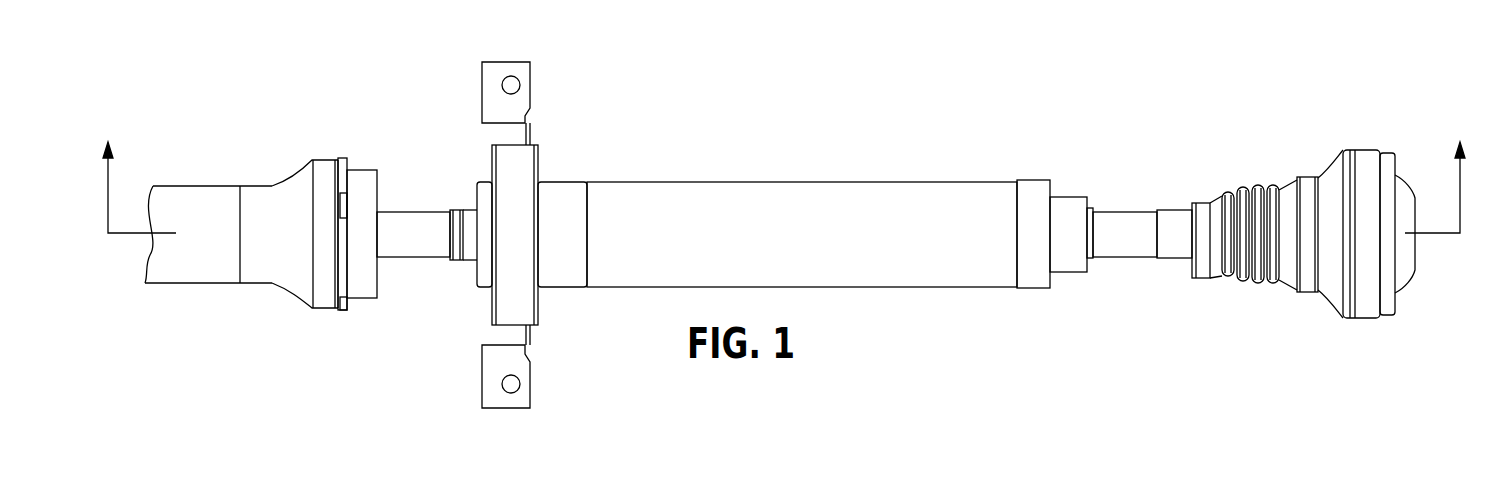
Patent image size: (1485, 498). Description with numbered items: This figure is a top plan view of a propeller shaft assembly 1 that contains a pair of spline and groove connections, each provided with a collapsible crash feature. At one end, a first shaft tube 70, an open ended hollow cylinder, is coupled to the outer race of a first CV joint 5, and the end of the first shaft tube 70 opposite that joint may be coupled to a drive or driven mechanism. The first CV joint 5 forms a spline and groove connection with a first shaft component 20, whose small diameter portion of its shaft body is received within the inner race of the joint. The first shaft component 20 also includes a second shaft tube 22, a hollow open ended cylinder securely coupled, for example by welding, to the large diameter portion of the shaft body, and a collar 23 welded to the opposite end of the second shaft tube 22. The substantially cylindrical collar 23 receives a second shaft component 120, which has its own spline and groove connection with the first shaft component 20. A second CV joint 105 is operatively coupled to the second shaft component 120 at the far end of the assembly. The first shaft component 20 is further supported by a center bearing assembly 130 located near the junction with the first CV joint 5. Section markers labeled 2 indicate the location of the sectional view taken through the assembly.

The propeller shaft assembly 1 is at (1126, 101).
The section line for FIG. 2 is at (784, 164).
The first CV joint 5 is at (303, 153).
The first shaft component 20 is at (404, 203).
The second shaft tube 22 is at (786, 177).
The collar 23 is at (1043, 293).
The first shaft tube 70 is at (200, 183).
The second CV joint 105 is at (1323, 312).
The second shaft component 120 is at (1124, 201).
The center bearing assembly 130 is at (543, 329).